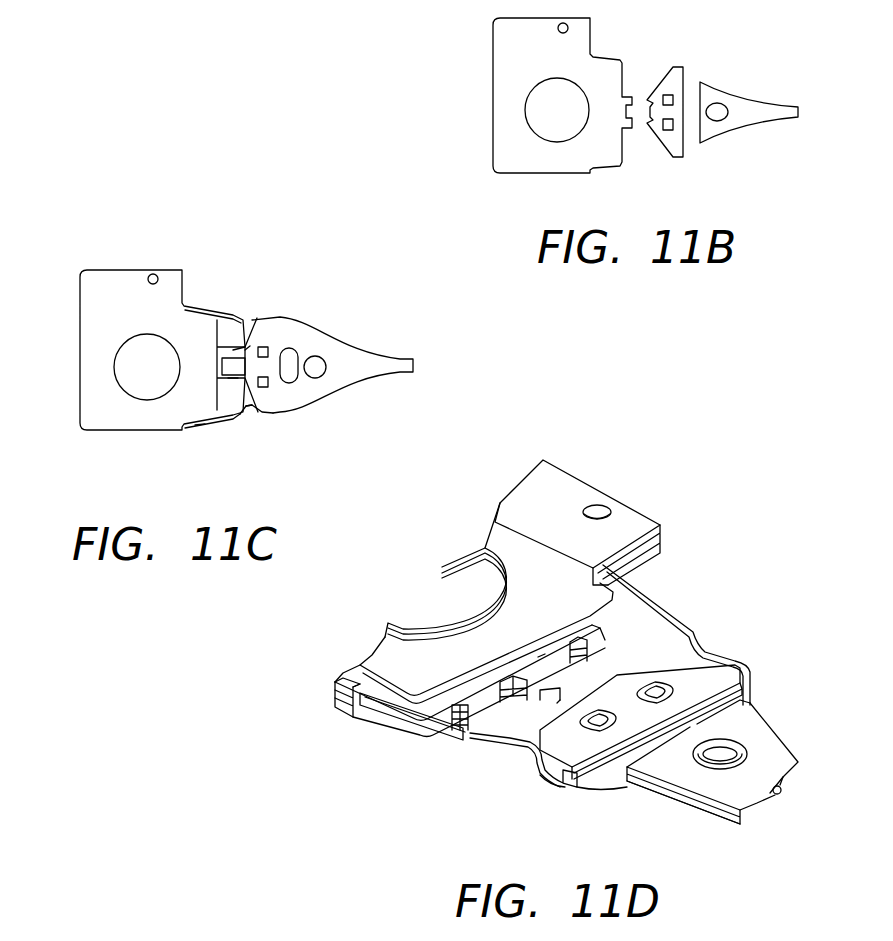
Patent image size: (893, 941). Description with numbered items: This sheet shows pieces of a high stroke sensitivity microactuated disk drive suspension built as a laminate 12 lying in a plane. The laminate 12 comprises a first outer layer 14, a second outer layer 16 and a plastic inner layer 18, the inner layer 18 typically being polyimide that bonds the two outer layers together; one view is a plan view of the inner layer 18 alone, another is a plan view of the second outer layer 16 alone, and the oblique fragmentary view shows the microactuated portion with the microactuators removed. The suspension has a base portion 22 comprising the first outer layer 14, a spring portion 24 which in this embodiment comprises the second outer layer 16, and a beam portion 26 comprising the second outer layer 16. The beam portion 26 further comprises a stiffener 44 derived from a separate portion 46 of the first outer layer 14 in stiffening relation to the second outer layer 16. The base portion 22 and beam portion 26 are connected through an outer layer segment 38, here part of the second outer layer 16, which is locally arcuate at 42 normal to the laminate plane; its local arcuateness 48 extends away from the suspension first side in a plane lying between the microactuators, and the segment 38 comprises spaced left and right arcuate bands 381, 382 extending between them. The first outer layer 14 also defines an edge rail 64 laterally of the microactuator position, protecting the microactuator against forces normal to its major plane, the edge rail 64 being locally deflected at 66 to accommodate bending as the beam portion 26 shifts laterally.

In FIG. 11D, the laminate 12 is at (665, 510).
In FIG. 11D, the first outer layer 14 is at (357, 686).
In FIG. 11C, the second outer layer 16 is at (68, 272).
In FIG. 11D, the second outer layer 16 is at (647, 798).
In FIG. 11B, the inner layer 18 is at (480, 18).
In FIG. 11D, the inner layer 18 is at (466, 718).
In FIG. 11D, the base portion 22 is at (597, 478).
In FIG. 11D, the spring portion 24 is at (760, 702).
In FIG. 11D, the beam portion 26 is at (665, 815).
In FIG. 11C, the outer layer segment 38 is at (245, 350).
In FIG. 11D, the outer layer segment 38 is at (557, 703).
In FIG. 11D, the locally arcuate region 42 is at (667, 640).
In FIG. 11D, the stiffener 44 is at (782, 745).
In FIG. 11D, the portion of the first outer layer 46 is at (503, 593).
In FIG. 11D, the local arcuateness 48 is at (547, 693).
In FIG. 11C, the edge rail 64 is at (200, 428).
In FIG. 11C, the local deflection 66 is at (250, 407).
In FIG. 11C, the left arcuate band 381 is at (233, 380).
In FIG. 11C, the right arcuate band 382 is at (233, 350).
In FIG. 11D, the right arcuate band 382 is at (585, 660).